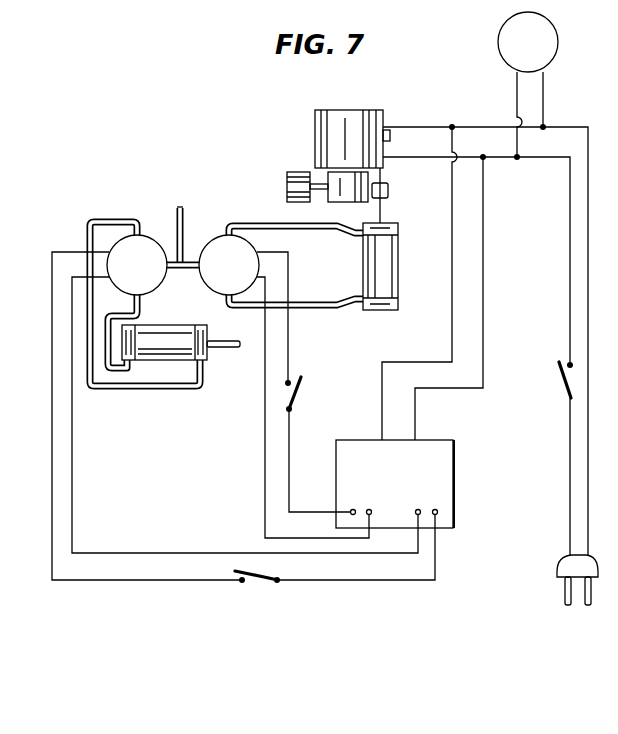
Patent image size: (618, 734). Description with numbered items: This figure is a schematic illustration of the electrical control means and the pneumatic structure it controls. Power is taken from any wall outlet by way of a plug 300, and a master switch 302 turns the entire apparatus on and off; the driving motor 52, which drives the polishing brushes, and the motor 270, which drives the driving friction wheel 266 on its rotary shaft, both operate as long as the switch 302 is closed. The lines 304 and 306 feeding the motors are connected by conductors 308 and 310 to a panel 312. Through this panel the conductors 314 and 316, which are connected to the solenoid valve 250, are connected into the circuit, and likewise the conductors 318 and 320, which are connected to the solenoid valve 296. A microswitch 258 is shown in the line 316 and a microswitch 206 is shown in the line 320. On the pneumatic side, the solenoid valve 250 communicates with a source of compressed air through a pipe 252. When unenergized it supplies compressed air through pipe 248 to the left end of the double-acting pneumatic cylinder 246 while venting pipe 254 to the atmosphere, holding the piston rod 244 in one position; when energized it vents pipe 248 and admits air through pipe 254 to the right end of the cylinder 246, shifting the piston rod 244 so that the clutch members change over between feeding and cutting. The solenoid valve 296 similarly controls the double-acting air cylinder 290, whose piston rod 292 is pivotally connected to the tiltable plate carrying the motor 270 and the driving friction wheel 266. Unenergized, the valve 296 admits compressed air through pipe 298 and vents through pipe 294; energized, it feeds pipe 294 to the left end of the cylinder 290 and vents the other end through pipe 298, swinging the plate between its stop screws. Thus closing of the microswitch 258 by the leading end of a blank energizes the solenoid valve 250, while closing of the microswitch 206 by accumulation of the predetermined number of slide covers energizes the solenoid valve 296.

The driving motor 52 is at (498, 50).
The microswitch 206 is at (298, 398).
The piston rod 244 is at (226, 350).
The double-acting pneumatic cylinder 246 is at (164, 342).
The pipe 248 is at (142, 303).
The solenoid valve 250 is at (137, 265).
The pipe 252 is at (180, 212).
The pipe 254 is at (133, 392).
The microswitch 258 is at (250, 583).
The driving friction wheel 266 is at (288, 190).
The motor 270 is at (322, 137).
The double-acting air cylinder 290 is at (398, 270).
The piston rod 292 is at (383, 212).
The pipe 294 is at (306, 230).
The solenoid valve 296 is at (229, 265).
The pipe 298 is at (318, 309).
The plug 300 is at (562, 563).
The master switch 302 is at (560, 385).
The line 304 is at (569, 250).
The line 306 is at (587, 213).
The conductor 308 is at (451, 342).
The conductor 310 is at (483, 316).
The panel 312 is at (395, 484).
The conductor 314 is at (183, 553).
The conductor 316 is at (157, 583).
The conductor 318 is at (294, 407).
The conductor 320 is at (303, 382).